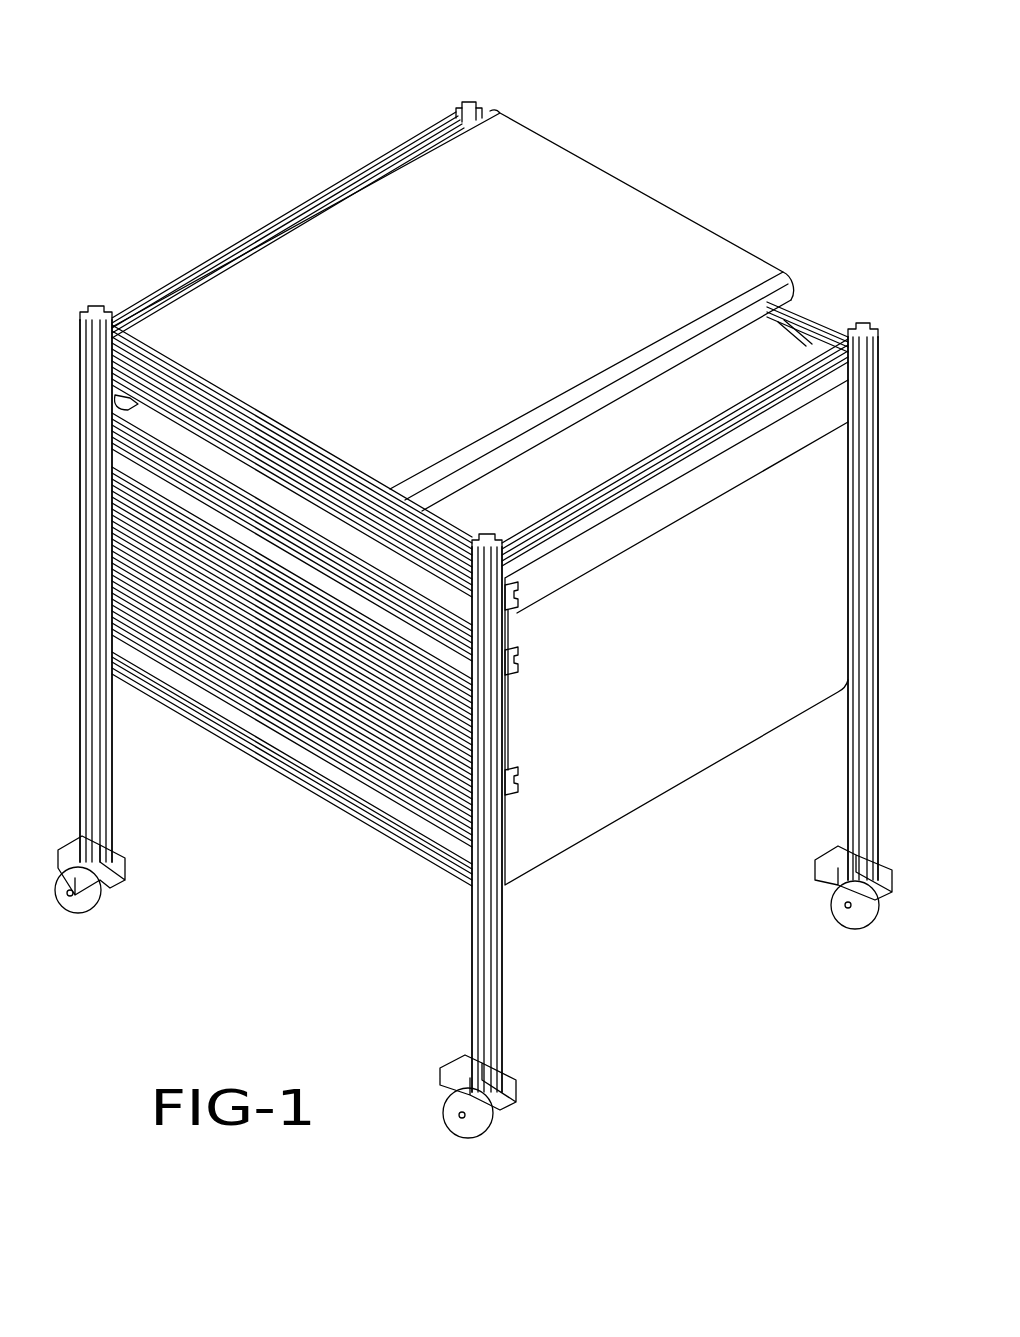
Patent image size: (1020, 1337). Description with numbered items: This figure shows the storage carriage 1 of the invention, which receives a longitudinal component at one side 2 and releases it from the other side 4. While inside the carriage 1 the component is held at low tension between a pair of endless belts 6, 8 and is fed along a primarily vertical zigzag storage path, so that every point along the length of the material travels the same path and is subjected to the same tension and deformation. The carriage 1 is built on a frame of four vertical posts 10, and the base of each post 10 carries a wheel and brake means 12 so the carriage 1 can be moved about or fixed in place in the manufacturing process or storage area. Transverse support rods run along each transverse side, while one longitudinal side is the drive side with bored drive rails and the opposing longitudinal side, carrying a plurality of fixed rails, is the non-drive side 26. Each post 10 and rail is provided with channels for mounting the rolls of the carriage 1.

The storage carriage 1 is at (386, 107).
The one side 2 is at (136, 272).
The other side 4 is at (886, 454).
The endless belt 6 is at (575, 212).
The endless belt 8 is at (657, 757).
The vertical post 10 is at (110, 787).
The wheel and brake means 12 is at (478, 1112).
The non-drive side 26 is at (307, 788).